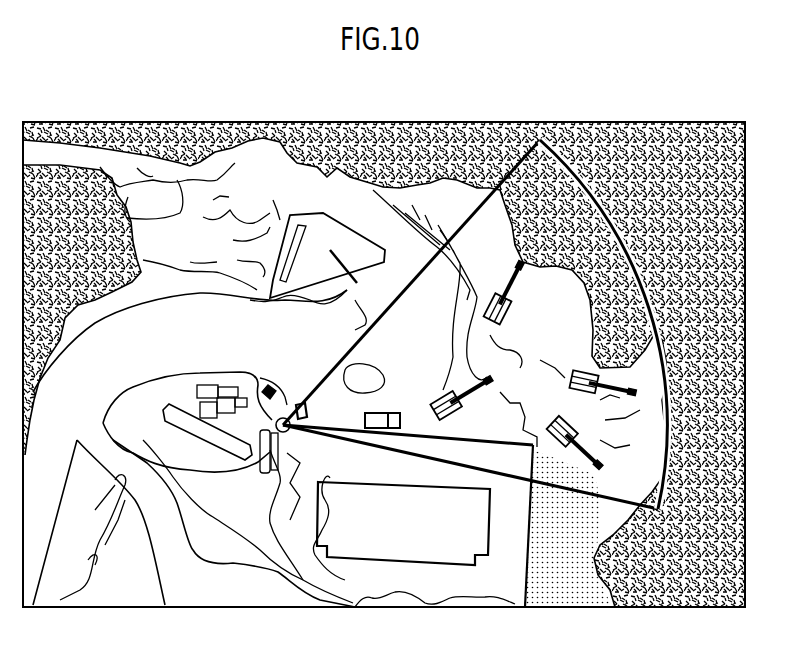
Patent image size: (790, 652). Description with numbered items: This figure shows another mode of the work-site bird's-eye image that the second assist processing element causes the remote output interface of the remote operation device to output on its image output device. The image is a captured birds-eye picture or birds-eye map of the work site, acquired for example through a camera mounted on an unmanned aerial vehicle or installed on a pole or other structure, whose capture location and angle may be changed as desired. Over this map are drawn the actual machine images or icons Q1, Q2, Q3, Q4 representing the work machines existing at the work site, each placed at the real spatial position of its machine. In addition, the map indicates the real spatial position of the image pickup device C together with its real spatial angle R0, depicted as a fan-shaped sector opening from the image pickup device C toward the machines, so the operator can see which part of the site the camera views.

The image pickup device C is at (257, 405).
The angle of the image pickup device R0 is at (586, 156).
The icon representing a work machine Q1 is at (635, 466).
The icon representing a work machine Q2 is at (424, 395).
The icon representing a work machine Q3 is at (540, 290).
The icon representing a work machine Q4 is at (627, 375).